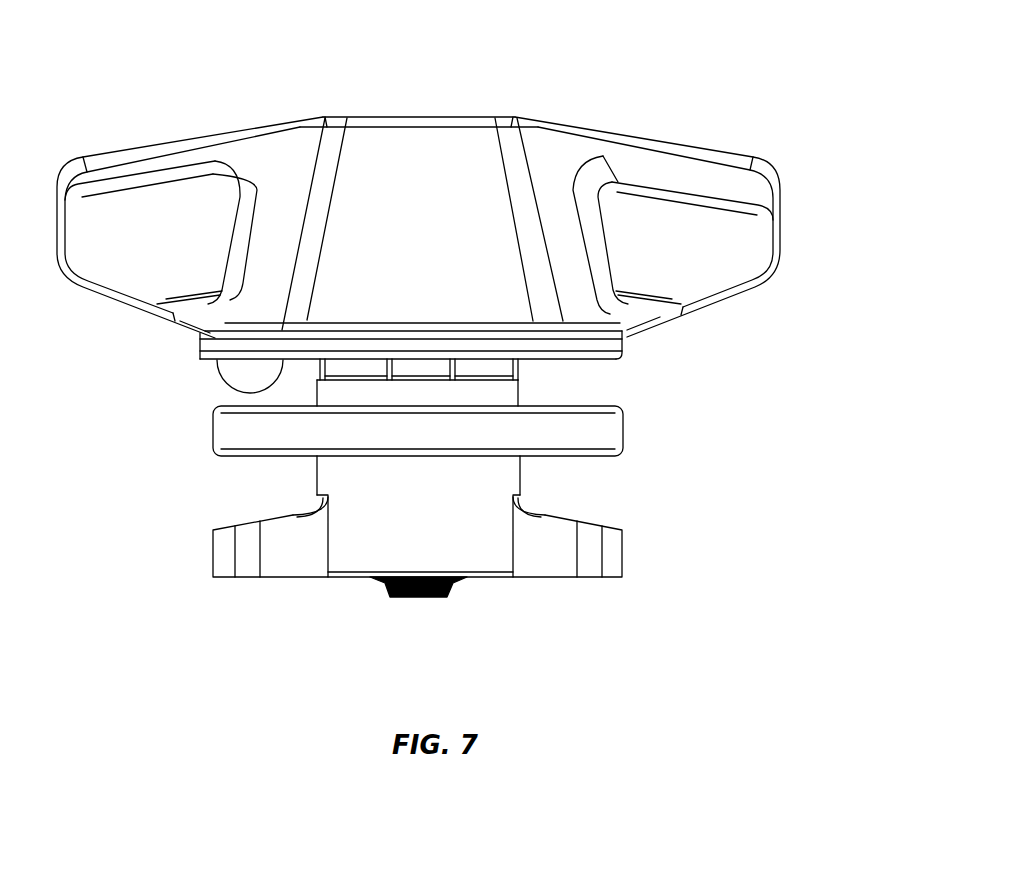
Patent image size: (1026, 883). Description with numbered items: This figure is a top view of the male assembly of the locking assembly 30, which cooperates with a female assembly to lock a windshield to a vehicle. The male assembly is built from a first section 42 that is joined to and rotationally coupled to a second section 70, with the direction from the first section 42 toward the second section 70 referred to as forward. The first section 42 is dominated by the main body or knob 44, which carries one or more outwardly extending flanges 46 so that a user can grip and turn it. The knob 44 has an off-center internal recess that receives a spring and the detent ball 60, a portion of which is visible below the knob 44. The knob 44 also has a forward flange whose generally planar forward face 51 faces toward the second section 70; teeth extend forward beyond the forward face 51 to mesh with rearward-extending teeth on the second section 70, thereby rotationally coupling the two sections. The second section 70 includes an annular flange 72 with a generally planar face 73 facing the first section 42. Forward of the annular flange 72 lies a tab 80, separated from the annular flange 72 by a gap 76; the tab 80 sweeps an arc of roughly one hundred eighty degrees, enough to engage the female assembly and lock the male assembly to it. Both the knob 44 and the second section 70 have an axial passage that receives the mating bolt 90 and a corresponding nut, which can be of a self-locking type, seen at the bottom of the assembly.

The locking assembly 30 is at (230, 74).
The first section 42 is at (784, 160).
The main body (knob) 44 is at (467, 142).
The outwardly extending flange 46 is at (748, 232).
The forward face 51 is at (590, 363).
The detent ball 60 is at (245, 372).
The second section 70 is at (668, 476).
The annular flange 72 is at (603, 428).
The planar face 73 is at (579, 394).
The gap 76 is at (234, 484).
The tab 80 is at (560, 537).
The mating bolt 90 is at (420, 598).